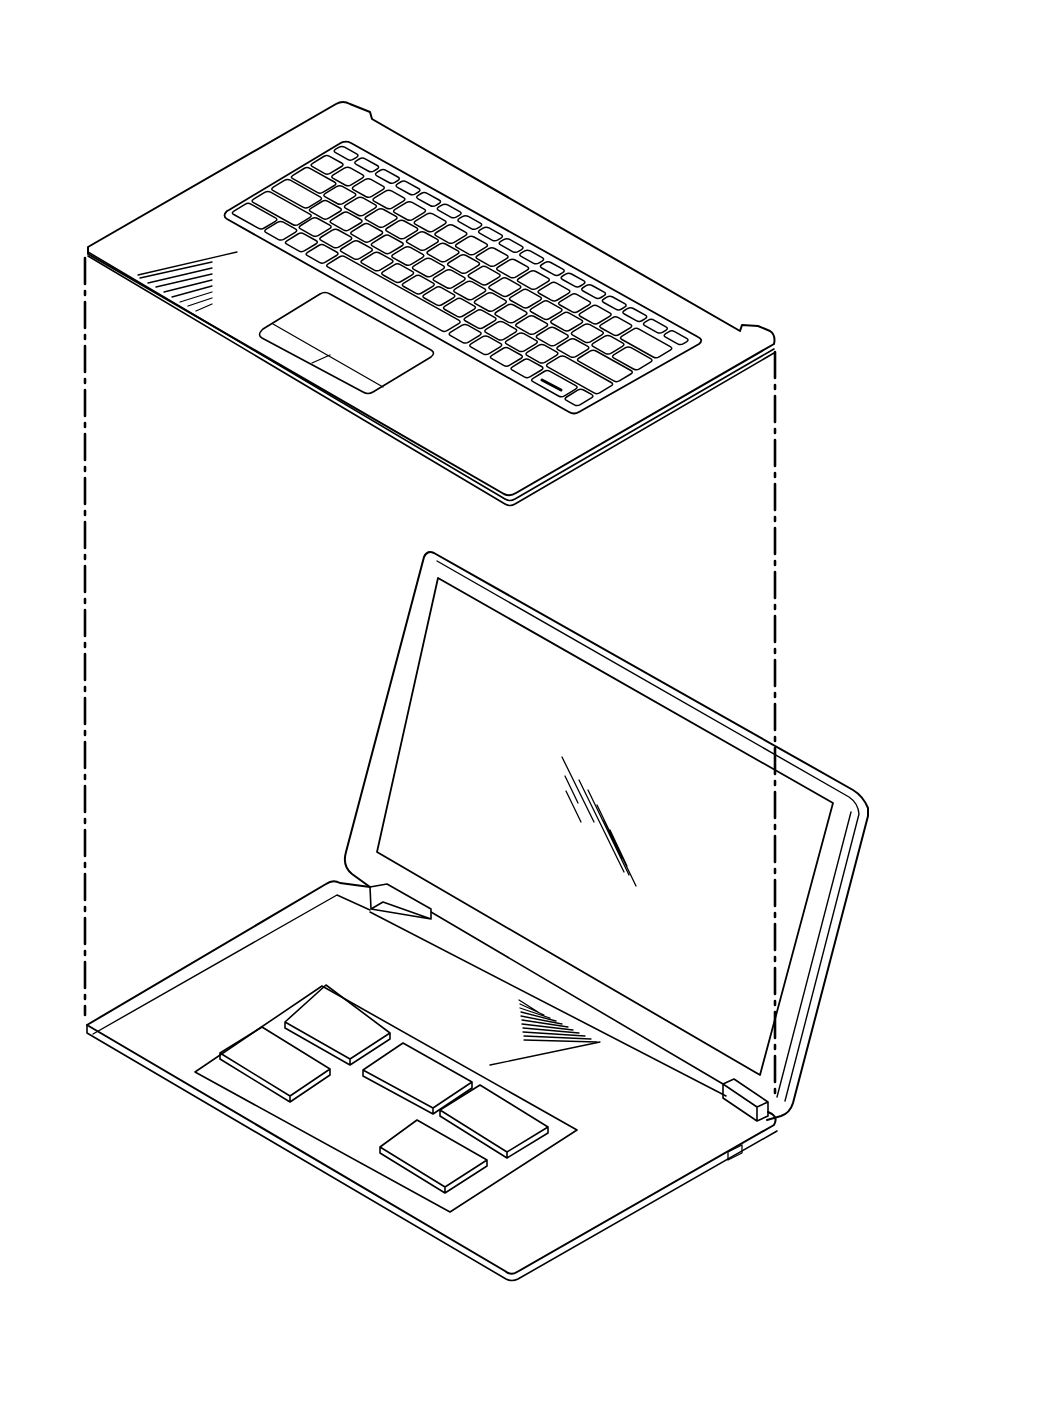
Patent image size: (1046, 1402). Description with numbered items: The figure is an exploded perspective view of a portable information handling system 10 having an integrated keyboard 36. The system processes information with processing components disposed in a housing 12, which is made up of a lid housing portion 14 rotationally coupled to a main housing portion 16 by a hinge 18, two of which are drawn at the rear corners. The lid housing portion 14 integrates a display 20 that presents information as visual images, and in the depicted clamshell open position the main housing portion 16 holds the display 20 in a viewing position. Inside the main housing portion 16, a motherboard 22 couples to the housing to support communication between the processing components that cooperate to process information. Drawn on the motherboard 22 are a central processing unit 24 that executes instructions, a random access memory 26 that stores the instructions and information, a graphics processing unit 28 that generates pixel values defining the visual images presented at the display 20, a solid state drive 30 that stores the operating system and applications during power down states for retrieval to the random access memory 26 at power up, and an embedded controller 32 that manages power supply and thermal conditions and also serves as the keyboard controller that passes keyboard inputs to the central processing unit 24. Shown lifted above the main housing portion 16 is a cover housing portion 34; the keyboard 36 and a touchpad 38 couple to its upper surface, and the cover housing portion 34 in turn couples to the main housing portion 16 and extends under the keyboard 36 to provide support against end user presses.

The portable information handling system 10 is at (716, 170).
The housing 12 is at (655, 1215).
The lid housing portion 14 is at (367, 777).
The main housing portion 16 is at (143, 1070).
The hinge 18 is at (730, 1097).
The display 20 is at (600, 687).
The motherboard 22 is at (328, 1124).
The central processing unit (CPU) 24 is at (307, 1020).
The random access memory (RAM) 26 is at (241, 1050).
The graphics processing unit (GPU) 28 is at (407, 1045).
The solid state drive (SSD) 30 is at (467, 1165).
The embedded controller 32 is at (520, 1130).
The cover housing portion 34 is at (136, 227).
The keyboard 36 is at (522, 240).
The touchpad 38 is at (372, 365).